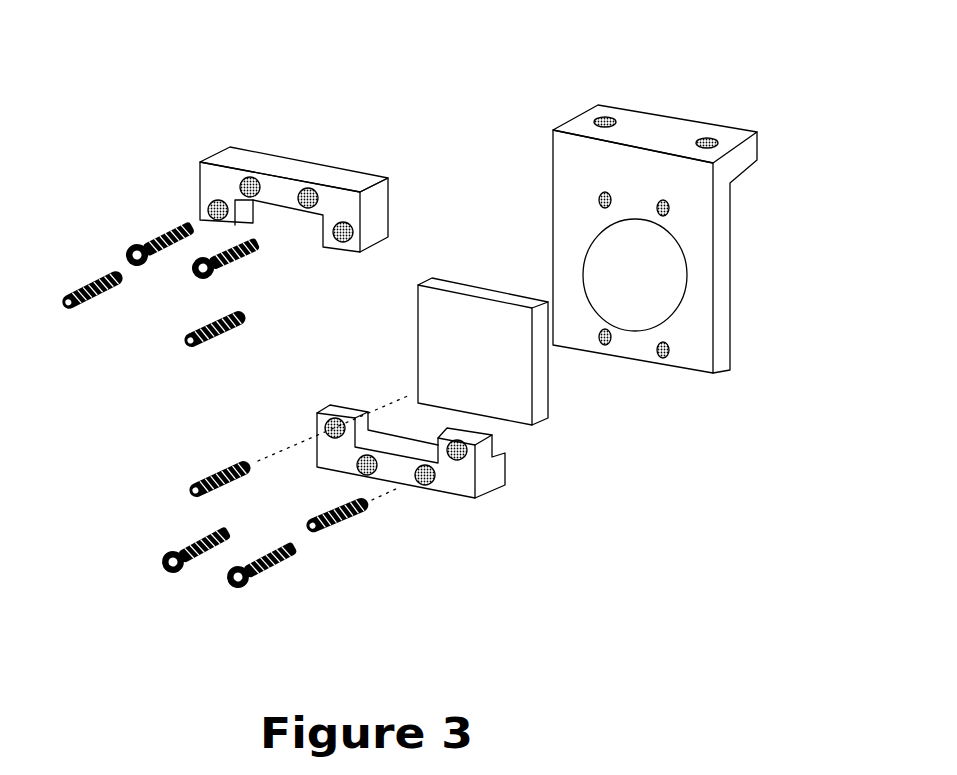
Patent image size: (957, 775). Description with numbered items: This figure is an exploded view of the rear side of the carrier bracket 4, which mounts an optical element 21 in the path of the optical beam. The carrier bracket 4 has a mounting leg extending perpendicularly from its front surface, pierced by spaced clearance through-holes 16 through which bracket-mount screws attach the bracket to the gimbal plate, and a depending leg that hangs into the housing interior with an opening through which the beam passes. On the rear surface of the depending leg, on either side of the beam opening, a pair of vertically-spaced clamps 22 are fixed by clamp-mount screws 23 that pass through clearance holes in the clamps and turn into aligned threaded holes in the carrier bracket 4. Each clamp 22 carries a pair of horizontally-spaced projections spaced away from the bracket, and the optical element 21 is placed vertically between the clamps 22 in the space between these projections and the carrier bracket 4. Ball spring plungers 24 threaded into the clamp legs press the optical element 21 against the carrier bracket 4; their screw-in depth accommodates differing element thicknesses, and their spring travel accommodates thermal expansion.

The carrier bracket 4 is at (737, 205).
The clearance through-holes 16 is at (617, 121).
The optical element 21 is at (553, 432).
The clamps 22 is at (203, 160).
The clamp-mount screws 23 is at (131, 238).
The ball spring plungers 24 is at (90, 283).